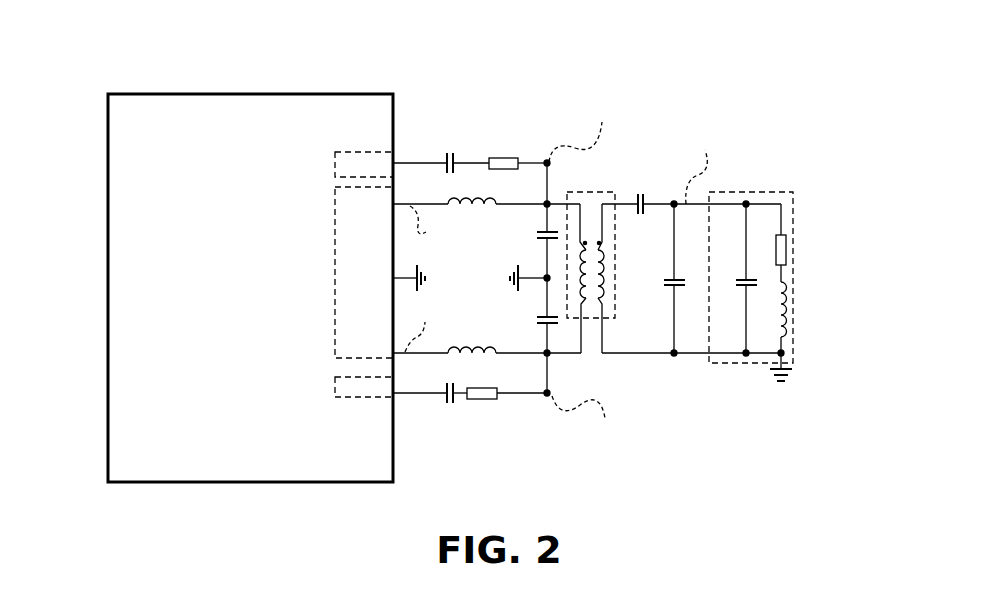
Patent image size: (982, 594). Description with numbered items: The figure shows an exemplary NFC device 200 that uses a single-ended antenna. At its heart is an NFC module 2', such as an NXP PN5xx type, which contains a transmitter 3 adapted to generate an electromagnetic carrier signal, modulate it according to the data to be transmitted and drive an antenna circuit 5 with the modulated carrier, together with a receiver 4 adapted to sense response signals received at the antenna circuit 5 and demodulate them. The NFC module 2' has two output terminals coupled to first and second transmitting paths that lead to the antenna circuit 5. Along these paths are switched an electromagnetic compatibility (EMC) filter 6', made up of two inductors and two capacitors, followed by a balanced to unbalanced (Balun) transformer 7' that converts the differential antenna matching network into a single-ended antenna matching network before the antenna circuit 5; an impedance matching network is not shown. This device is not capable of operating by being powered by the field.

The NFC reader circuit 200 is at (467, 113).
The NFC module 2' is at (229, 288).
The transmitter 3 is at (334, 252).
The receiver 4 is at (334, 150).
The antenna circuit 5 is at (794, 190).
The electromagnetic compatibility (EMC) filter 6' is at (514, 278).
The balanced to unbalanced (Balun) transformer 7' is at (598, 242).